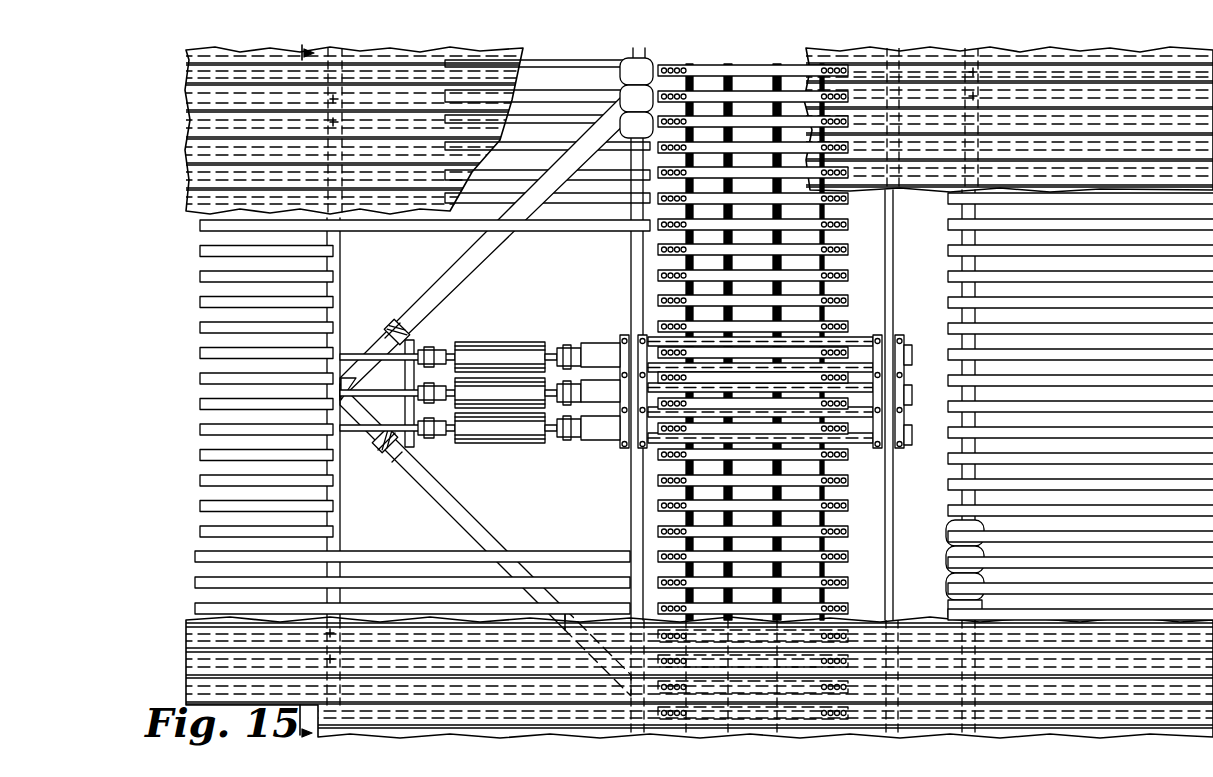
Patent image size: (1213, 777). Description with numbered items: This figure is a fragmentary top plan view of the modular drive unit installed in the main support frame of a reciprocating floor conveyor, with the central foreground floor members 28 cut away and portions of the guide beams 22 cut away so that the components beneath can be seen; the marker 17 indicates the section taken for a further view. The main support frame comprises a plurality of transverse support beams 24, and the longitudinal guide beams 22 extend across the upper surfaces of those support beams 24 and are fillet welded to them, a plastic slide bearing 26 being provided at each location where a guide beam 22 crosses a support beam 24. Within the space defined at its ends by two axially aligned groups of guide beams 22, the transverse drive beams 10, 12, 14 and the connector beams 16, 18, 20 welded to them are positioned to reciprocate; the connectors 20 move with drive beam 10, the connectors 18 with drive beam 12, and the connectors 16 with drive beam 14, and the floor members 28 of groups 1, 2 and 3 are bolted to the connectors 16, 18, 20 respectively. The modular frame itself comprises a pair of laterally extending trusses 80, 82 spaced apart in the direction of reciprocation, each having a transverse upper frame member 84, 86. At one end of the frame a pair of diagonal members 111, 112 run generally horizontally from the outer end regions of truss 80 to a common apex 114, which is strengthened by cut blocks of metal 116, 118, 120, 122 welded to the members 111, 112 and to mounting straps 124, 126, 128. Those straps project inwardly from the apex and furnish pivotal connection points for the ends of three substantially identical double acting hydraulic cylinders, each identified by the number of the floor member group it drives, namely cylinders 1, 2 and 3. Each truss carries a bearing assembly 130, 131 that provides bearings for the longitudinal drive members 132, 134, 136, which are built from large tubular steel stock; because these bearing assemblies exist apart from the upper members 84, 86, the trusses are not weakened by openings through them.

The group one floor members / drive cylinder 1 is at (500, 393).
The group two floor members / drive cylinder 2 is at (500, 428).
The group three floor members / drive cylinder 3 is at (500, 357).
The transverse drive beam 10 is at (724, 515).
The transverse drive beam 12 is at (820, 479).
The transverse drive beam 14 is at (820, 504).
The connector beam 16 is at (850, 298).
The section line 17- 17 is at (292, 388).
The connector beam 18 is at (850, 323).
The connector beam 20 is at (848, 272).
The guide beam 22 is at (641, 230).
The transverse support beam 24 is at (340, 548).
The plastic slide bearing 26 is at (334, 124).
The floor member 28 is at (186, 130).
The truss 80 is at (655, 478).
The truss 82 is at (905, 462).
The transverse upper frame member 84 is at (640, 520).
The transverse upper frame member 86 is at (896, 255).
The diagonal member 111 is at (485, 540).
The diagonal member 112 is at (455, 260).
The apex 114 is at (348, 385).
The cut block of metal 116 is at (412, 440).
The cut block of metal 118 is at (380, 448).
The cut block of metal 120 is at (395, 390).
The cut block of metal 122 is at (398, 318).
The mounting strap 124 is at (390, 465).
The mounting strap 126 is at (380, 428).
The mounting strap 128 is at (392, 335).
The bearing assembly 130 is at (625, 325).
The bearing assembly 131 is at (940, 328).
The longitudinal drive member 132 is at (594, 432).
The longitudinal drive member 134 is at (578, 385).
The longitudinal drive member 136 is at (618, 348).